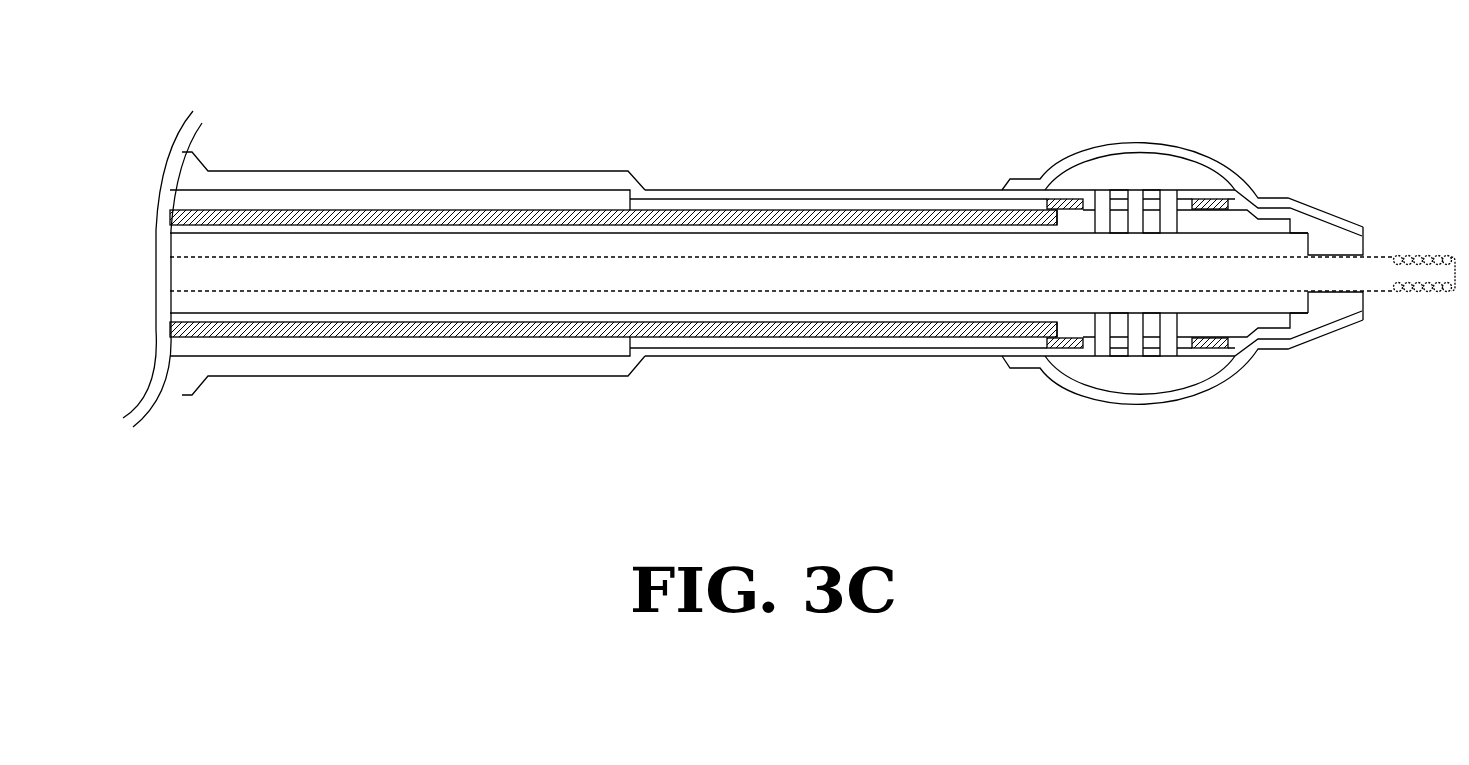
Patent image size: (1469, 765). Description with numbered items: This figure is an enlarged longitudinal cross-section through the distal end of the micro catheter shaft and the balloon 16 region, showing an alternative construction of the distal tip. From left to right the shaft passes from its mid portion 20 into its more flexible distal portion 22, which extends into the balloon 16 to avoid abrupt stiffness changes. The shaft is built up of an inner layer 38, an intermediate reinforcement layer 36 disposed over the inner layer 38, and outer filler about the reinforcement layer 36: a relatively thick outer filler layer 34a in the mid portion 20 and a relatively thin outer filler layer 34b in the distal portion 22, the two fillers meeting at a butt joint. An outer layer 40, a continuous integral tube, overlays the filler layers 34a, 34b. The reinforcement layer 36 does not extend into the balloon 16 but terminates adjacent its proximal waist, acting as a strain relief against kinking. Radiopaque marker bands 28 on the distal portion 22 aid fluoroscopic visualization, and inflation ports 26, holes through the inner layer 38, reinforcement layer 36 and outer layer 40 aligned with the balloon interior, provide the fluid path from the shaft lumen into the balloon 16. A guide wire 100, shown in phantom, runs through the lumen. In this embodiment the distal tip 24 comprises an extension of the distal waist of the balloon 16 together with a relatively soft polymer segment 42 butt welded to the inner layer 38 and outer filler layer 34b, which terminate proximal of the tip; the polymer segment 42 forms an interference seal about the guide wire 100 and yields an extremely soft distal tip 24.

The balloon 16 is at (1147, 108).
The mid portion 20 is at (367, 427).
The distal portion 22 is at (828, 391).
The distal tip 24 is at (1378, 209).
The inflation ports 26 is at (1168, 348).
The radiopaque marker bands 28 is at (1062, 200).
The outer filler layer 34a is at (495, 207).
The outer filler layer 34b is at (667, 205).
The reinforcement layer 36 is at (753, 218).
The inner layer 38 is at (853, 230).
The outer layer 40 is at (277, 182).
The polymer segment 42 is at (1325, 310).
The guide wire 100 is at (1370, 283).